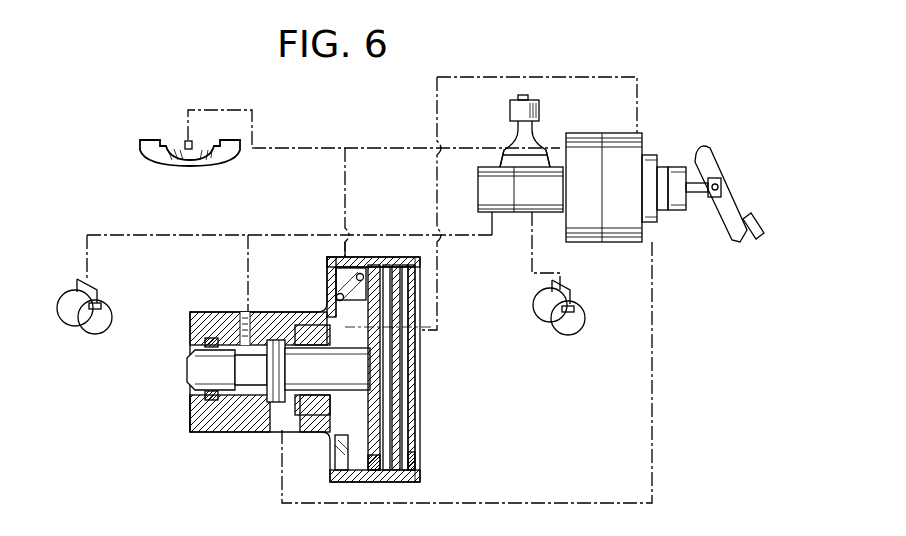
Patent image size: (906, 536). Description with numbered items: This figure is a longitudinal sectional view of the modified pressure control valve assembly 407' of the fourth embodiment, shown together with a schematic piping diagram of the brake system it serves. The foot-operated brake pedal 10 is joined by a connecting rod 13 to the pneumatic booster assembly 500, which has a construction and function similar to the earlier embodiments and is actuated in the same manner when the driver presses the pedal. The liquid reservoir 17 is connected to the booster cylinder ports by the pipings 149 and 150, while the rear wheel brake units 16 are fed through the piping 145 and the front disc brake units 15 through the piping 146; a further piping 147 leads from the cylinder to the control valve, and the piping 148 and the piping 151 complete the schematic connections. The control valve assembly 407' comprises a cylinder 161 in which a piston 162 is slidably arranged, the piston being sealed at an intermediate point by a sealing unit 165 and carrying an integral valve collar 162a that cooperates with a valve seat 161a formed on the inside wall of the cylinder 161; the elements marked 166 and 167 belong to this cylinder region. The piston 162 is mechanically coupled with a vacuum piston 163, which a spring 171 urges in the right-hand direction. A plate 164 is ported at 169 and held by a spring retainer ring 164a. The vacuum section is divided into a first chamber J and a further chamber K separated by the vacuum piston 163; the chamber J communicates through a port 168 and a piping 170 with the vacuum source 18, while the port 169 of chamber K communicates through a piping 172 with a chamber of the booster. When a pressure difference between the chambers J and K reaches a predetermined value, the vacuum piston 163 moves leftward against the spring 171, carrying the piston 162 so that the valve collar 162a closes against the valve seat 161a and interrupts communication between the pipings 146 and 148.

The brake pedal 10 is at (748, 217).
The connecting rod 13 is at (710, 197).
The disc brake units 15 is at (66, 316).
The rear wheel brake units 16 is at (580, 320).
The reservoir 17 is at (539, 105).
The vacuum source 18 is at (190, 166).
The piping 145 is at (534, 248).
The piping 146 is at (145, 242).
The piping 147 is at (250, 250).
The piping 148 is at (536, 503).
The piping 149 is at (540, 143).
The piping 150 is at (508, 142).
The conductor 151 is at (372, 148).
The cylinder 161 is at (213, 428).
The valve seat 161a is at (272, 340).
The piston 162 is at (198, 372).
The valve collar 162a is at (285, 366).
The vacuum piston 163 is at (380, 470).
The plate 164 is at (415, 386).
The spring retainer ring 164a is at (415, 468).
The sealing unit 165 is at (318, 420).
The threaded bore 166 is at (244, 322).
The lock nut 167 is at (278, 420).
The port 168 is at (346, 257).
The port 169 is at (412, 343).
The piping 170 is at (345, 178).
The spring 171 is at (356, 455).
The piping 172 is at (440, 270).
The pressure control valve assembly 407' is at (160, 420).
The pneumatic booster assembly 500 is at (698, 116).
The piston chamber J is at (340, 462).
The chamber K is at (396, 422).